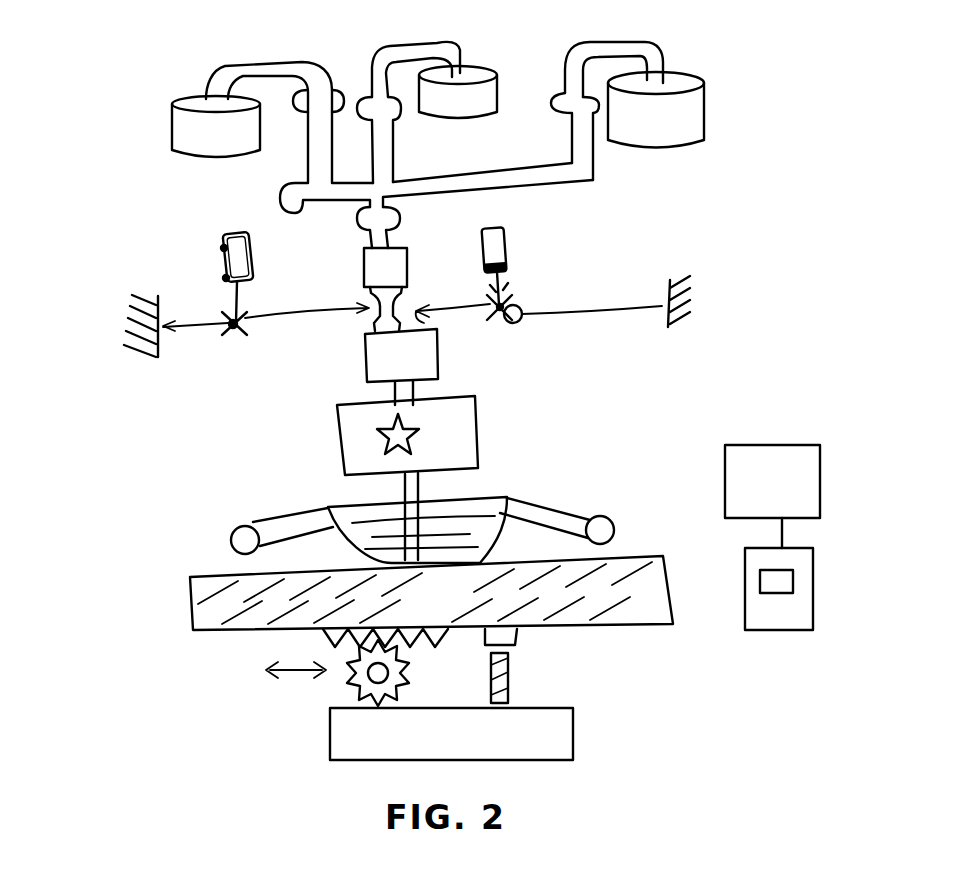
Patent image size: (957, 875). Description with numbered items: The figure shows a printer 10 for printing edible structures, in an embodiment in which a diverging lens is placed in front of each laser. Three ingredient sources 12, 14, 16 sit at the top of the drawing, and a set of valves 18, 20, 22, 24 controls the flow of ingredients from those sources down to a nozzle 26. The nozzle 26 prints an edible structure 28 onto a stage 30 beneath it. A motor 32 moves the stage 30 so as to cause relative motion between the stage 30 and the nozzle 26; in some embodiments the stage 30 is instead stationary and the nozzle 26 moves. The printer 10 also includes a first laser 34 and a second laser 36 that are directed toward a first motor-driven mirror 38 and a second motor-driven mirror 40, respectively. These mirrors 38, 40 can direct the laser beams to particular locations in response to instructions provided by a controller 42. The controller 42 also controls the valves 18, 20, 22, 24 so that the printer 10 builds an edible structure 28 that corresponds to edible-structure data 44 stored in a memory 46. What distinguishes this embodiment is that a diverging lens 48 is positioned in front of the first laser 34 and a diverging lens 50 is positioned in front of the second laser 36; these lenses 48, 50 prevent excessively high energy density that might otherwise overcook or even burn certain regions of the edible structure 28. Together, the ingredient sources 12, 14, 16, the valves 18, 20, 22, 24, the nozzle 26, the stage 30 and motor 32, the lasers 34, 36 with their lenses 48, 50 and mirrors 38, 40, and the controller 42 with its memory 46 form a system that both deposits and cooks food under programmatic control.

The printer 10 is at (145, 182).
The ingredient source 12 is at (204, 151).
The ingredient source 14 is at (447, 116).
The ingredient source 16 is at (639, 134).
The valve 18 is at (326, 73).
The valve 20 is at (366, 100).
The valve 22 is at (550, 97).
The valve 24 is at (398, 217).
The nozzle 26 is at (372, 281).
The edible structure 28 is at (387, 371).
The stage 30 is at (415, 611).
The motor 32 is at (419, 748).
The first laser 34 is at (506, 250).
The second laser 36 is at (222, 262).
The first motor-driven mirror 38 is at (231, 342).
The second motor-driven mirror 40 is at (505, 330).
The controller 42 is at (762, 496).
The edible-structure data 44 is at (820, 572).
The memory 46 is at (783, 582).
The diverging lens 48 is at (247, 302).
The diverging lens 50 is at (506, 290).